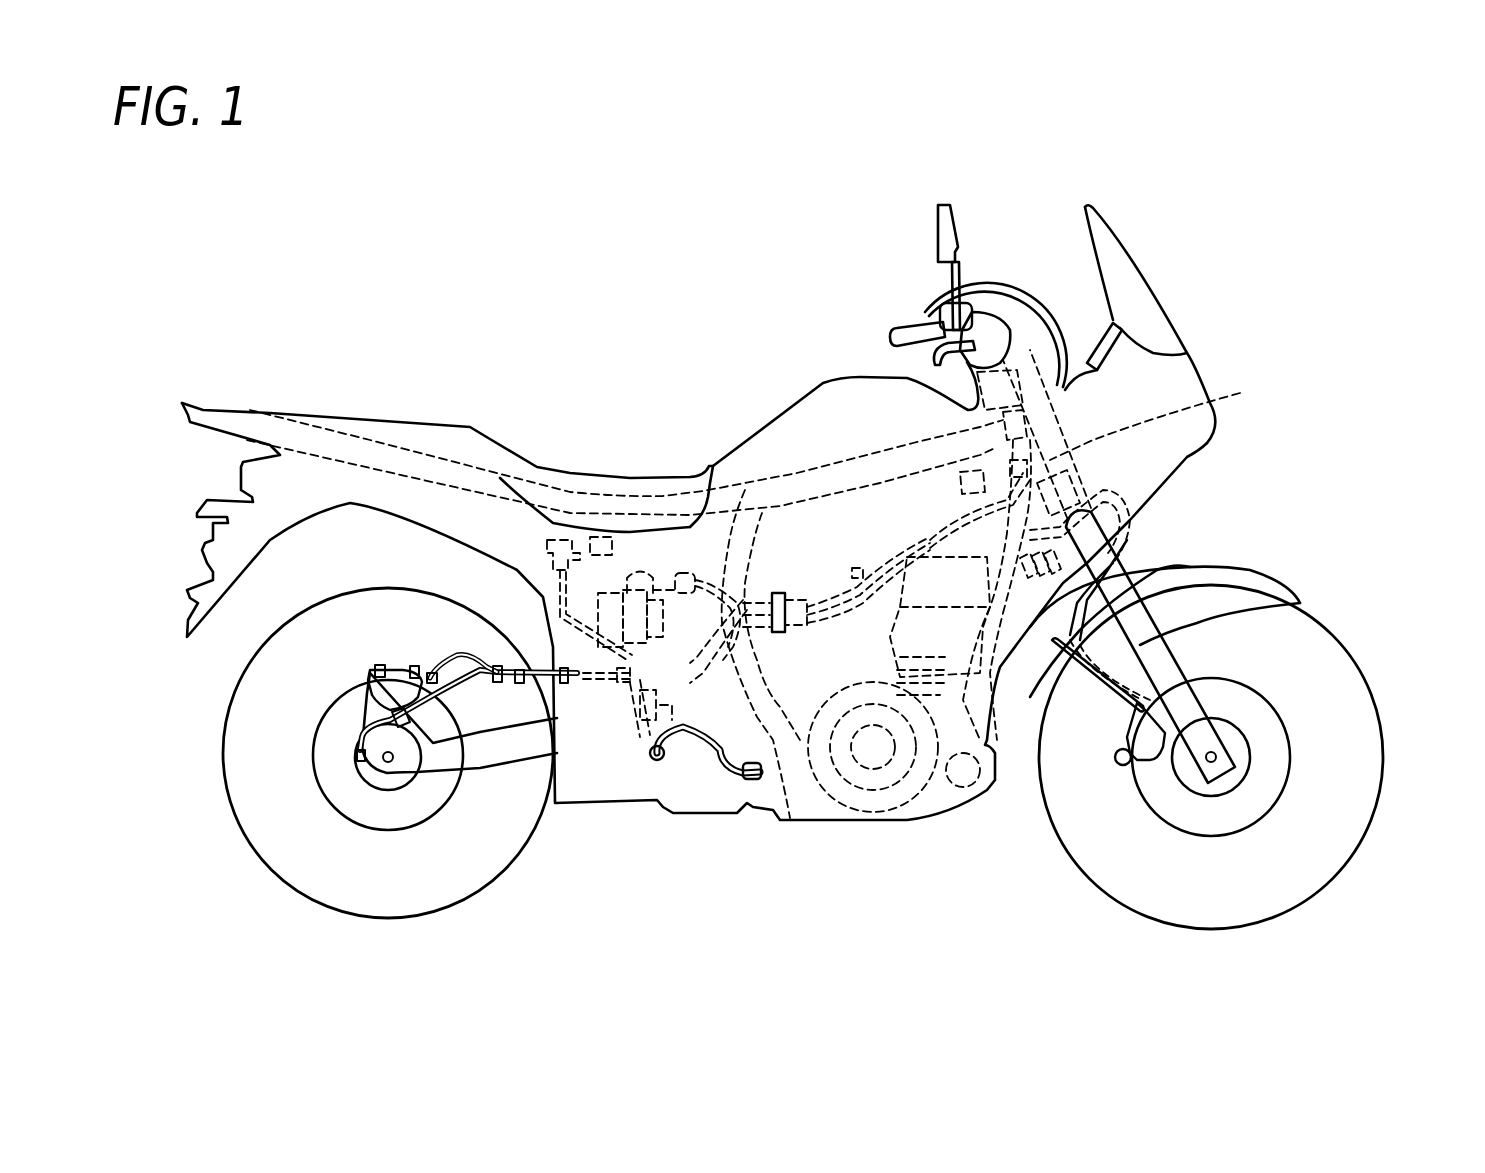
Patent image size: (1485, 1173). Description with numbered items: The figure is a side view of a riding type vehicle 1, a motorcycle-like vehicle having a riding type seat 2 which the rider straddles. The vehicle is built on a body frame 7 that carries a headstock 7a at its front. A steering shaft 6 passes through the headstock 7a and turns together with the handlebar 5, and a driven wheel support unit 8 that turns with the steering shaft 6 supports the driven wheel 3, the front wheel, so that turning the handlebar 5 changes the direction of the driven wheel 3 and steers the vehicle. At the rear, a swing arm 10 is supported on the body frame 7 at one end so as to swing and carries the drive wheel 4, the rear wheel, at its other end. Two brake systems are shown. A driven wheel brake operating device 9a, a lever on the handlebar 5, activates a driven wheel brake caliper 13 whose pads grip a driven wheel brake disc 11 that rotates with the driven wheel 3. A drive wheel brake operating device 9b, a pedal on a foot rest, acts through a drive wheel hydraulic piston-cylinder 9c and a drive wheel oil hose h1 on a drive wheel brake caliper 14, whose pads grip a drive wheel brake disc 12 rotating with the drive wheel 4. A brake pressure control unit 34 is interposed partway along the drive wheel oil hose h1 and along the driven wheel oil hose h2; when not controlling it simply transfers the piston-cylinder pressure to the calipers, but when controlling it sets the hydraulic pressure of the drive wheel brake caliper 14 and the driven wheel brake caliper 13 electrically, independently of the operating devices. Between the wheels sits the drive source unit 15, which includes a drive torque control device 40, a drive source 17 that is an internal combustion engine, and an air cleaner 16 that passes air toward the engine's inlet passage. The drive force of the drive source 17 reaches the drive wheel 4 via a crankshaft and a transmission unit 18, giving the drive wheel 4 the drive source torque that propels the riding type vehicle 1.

The riding type vehicle 1 is at (739, 247).
The riding type seat 2 is at (590, 477).
The driven wheel 3 is at (1351, 675).
The drive wheel 4 is at (237, 715).
The handlebar 5 is at (910, 330).
The steering shaft 6 is at (1040, 330).
The body frame 7 is at (745, 490).
The headstock 7a is at (1220, 407).
The driven wheel support unit 8 is at (1137, 613).
The driven wheel brake operating device 9a is at (947, 347).
The drive wheel brake operating device 9b is at (717, 763).
The drive wheel hydraulic piston-cylinder 9c is at (673, 723).
The swing arm 10 is at (497, 750).
The driven wheel brake disc 11 is at (1277, 750).
The drive wheel brake disc 12 is at (435, 798).
The driven wheel brake caliper 13 is at (1150, 745).
The drive wheel brake caliper 14 is at (390, 692).
The drive source unit 15 is at (838, 950).
The air cleaner 16 is at (955, 590).
The drive source 17 is at (932, 643).
The transmission unit 18 is at (907, 810).
The brake pressure control unit 34 is at (610, 593).
The drive torque control device 40 is at (590, 503).
The drive wheel oil hose h1 is at (547, 677).
The driven wheel oil hose h2 is at (877, 545).